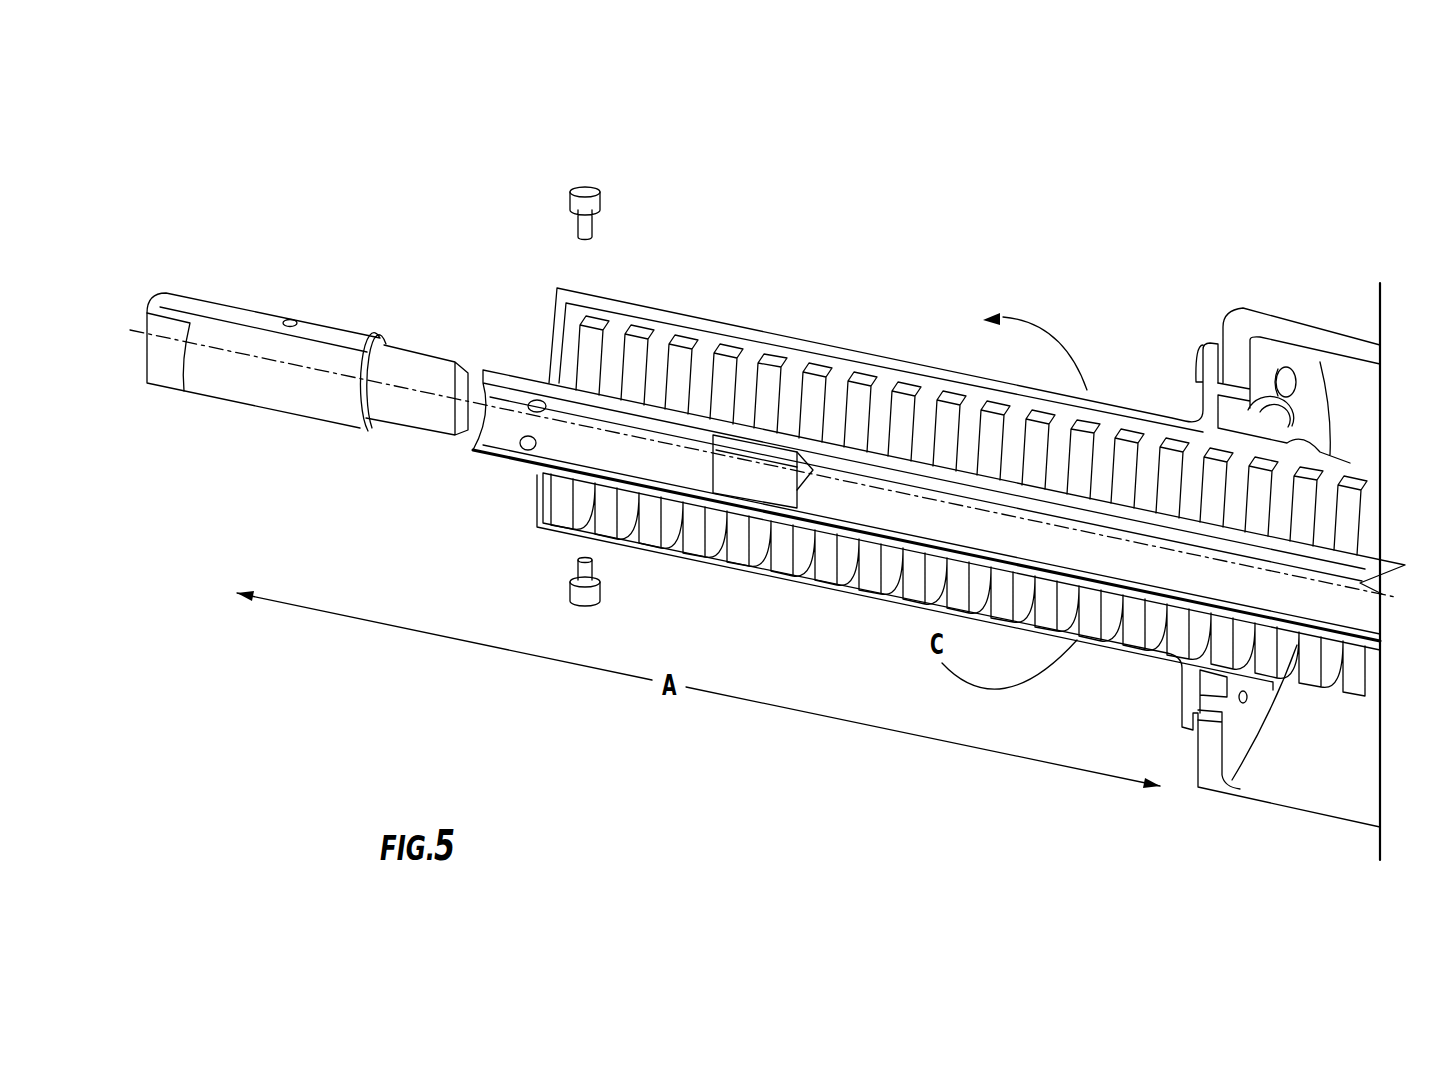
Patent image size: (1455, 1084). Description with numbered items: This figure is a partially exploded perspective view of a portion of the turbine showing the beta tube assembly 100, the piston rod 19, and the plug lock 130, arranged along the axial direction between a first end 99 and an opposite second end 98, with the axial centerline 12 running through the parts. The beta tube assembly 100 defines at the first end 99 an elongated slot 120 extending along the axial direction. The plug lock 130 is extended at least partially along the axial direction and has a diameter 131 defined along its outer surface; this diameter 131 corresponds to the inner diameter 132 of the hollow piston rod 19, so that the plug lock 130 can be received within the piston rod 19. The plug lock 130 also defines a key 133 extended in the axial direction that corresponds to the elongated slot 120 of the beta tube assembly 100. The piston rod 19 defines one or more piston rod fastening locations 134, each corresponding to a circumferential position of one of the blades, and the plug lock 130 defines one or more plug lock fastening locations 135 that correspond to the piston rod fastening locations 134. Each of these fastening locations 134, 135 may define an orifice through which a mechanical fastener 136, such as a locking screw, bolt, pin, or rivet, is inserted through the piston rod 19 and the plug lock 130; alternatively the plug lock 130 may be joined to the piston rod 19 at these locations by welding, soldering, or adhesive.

The axial centerline 12 is at (1331, 588).
The piston rod 19 is at (478, 450).
The second end 98 is at (1380, 598).
The first end 99 is at (108, 330).
The beta tube assembly 100 is at (781, 440).
The elongated slot 120 is at (738, 432).
The plug lock 130 is at (175, 305).
The diameter 131 is at (342, 335).
The inner diameter 132 is at (620, 467).
The key 133 is at (408, 370).
The piston rod fastening location 134 is at (528, 452).
The plug lock fastening location 135 is at (291, 318).
The mechanical fastener 136 is at (587, 193).